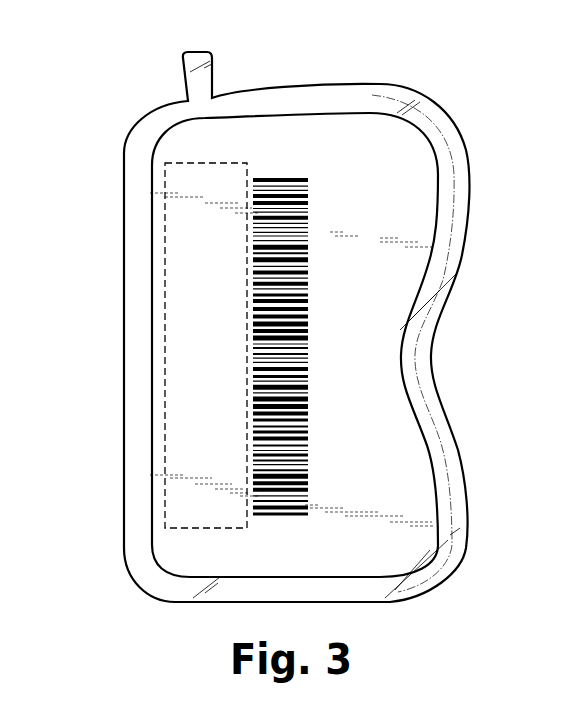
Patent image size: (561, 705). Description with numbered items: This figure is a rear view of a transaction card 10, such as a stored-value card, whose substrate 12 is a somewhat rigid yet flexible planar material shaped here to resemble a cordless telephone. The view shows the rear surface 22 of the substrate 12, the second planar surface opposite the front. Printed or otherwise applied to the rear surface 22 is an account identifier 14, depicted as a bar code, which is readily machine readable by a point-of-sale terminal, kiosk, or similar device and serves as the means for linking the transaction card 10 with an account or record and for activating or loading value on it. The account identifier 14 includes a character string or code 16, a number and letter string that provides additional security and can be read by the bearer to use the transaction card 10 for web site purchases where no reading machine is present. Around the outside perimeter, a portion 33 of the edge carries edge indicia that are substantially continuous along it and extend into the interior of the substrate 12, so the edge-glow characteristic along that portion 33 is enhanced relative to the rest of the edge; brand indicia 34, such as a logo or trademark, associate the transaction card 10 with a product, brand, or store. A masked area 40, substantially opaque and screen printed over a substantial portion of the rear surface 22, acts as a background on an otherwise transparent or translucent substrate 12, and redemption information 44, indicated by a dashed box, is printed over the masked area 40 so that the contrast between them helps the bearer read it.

The transaction card 10 is at (119, 58).
The substrate 12 is at (304, 99).
The account identifier 14 is at (302, 178).
The character string or code 16 is at (322, 196).
The rear surface 22 is at (138, 154).
The portion of edge 33 is at (443, 408).
The brand indicia 34 is at (463, 254).
The masked area 40 is at (405, 472).
The redemption information 44 is at (165, 350).